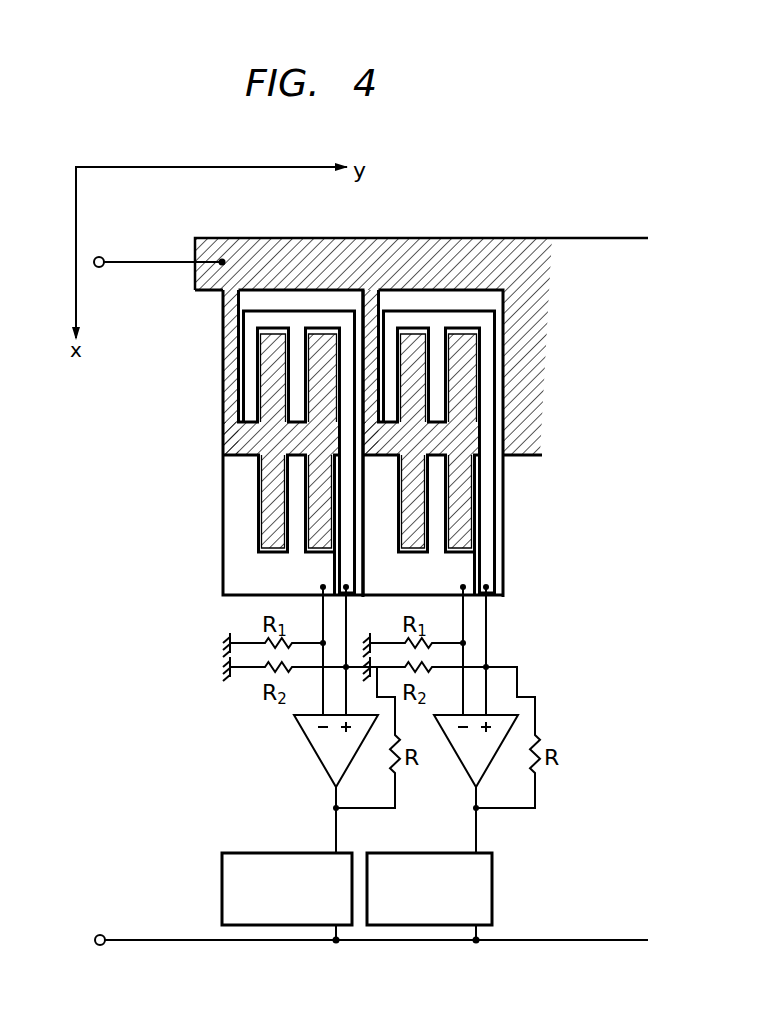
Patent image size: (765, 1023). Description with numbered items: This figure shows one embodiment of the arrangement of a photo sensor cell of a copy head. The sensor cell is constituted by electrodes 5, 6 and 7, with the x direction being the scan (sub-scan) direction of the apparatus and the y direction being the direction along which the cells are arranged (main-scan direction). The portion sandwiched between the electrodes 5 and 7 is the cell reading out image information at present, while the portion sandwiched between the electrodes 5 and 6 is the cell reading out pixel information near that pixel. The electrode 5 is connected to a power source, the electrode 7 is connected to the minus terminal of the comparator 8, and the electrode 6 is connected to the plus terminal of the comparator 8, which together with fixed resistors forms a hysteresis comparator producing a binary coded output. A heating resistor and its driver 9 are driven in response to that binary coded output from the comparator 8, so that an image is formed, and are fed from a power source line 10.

The electrode 5 is at (224, 238).
The electrode 6 is at (246, 390).
The electrode 7 is at (228, 513).
The comparator 8 is at (315, 742).
The heating resistor and its driver 9 is at (222, 870).
The power source line 10 is at (152, 943).